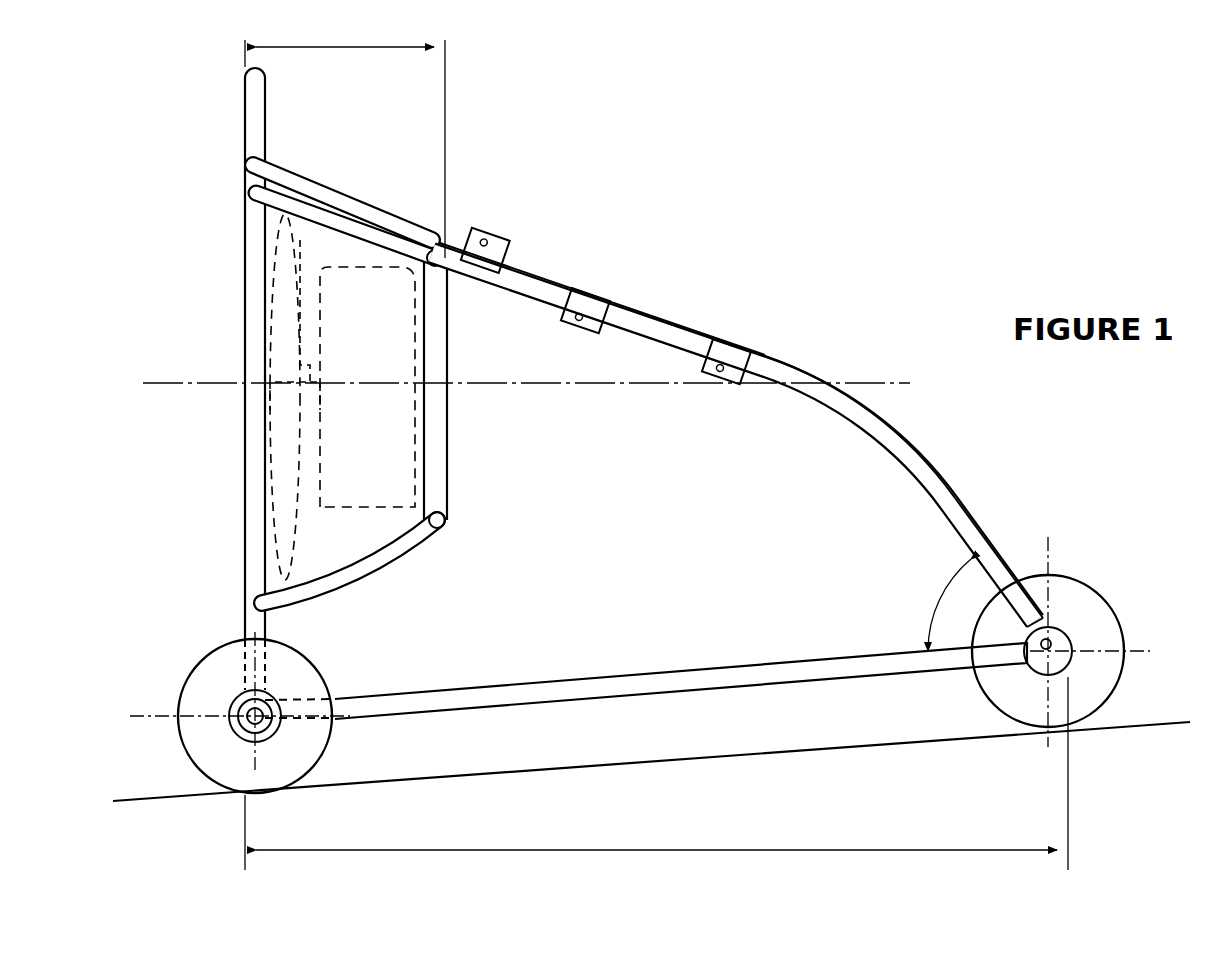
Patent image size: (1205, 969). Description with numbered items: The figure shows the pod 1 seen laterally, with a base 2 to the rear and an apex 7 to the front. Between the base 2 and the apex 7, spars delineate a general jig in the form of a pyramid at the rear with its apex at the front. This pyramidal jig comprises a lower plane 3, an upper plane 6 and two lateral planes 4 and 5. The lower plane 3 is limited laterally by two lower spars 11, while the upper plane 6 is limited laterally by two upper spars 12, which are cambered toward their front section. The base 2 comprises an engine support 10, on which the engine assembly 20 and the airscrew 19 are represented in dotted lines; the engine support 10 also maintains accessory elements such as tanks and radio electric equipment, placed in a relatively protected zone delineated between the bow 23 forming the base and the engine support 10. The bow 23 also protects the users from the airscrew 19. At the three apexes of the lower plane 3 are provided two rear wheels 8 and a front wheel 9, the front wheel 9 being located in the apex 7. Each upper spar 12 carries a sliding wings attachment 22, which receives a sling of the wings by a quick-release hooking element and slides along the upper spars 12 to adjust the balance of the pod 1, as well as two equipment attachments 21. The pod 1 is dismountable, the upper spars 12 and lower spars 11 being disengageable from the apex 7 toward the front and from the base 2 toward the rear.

The pod 1 is at (651, 455).
The base 2 is at (222, 461).
The lower plane 3 is at (628, 706).
The lateral plane 4 is at (777, 508).
The lateral plane 5 is at (643, 262).
The upper plane 6 is at (552, 243).
The apex 7 is at (1076, 556).
The rear wheel 8 is at (312, 672).
The front wheel 9 is at (1113, 672).
The engine support 10 is at (446, 480).
The lower spar 11 is at (522, 690).
The upper spar 12 is at (878, 418).
The airscrew 19 is at (260, 237).
The engine assembly 20 is at (356, 503).
The equipment attachment 21 is at (590, 325).
The wings attachment 22 is at (491, 238).
The bow 23 is at (250, 345).